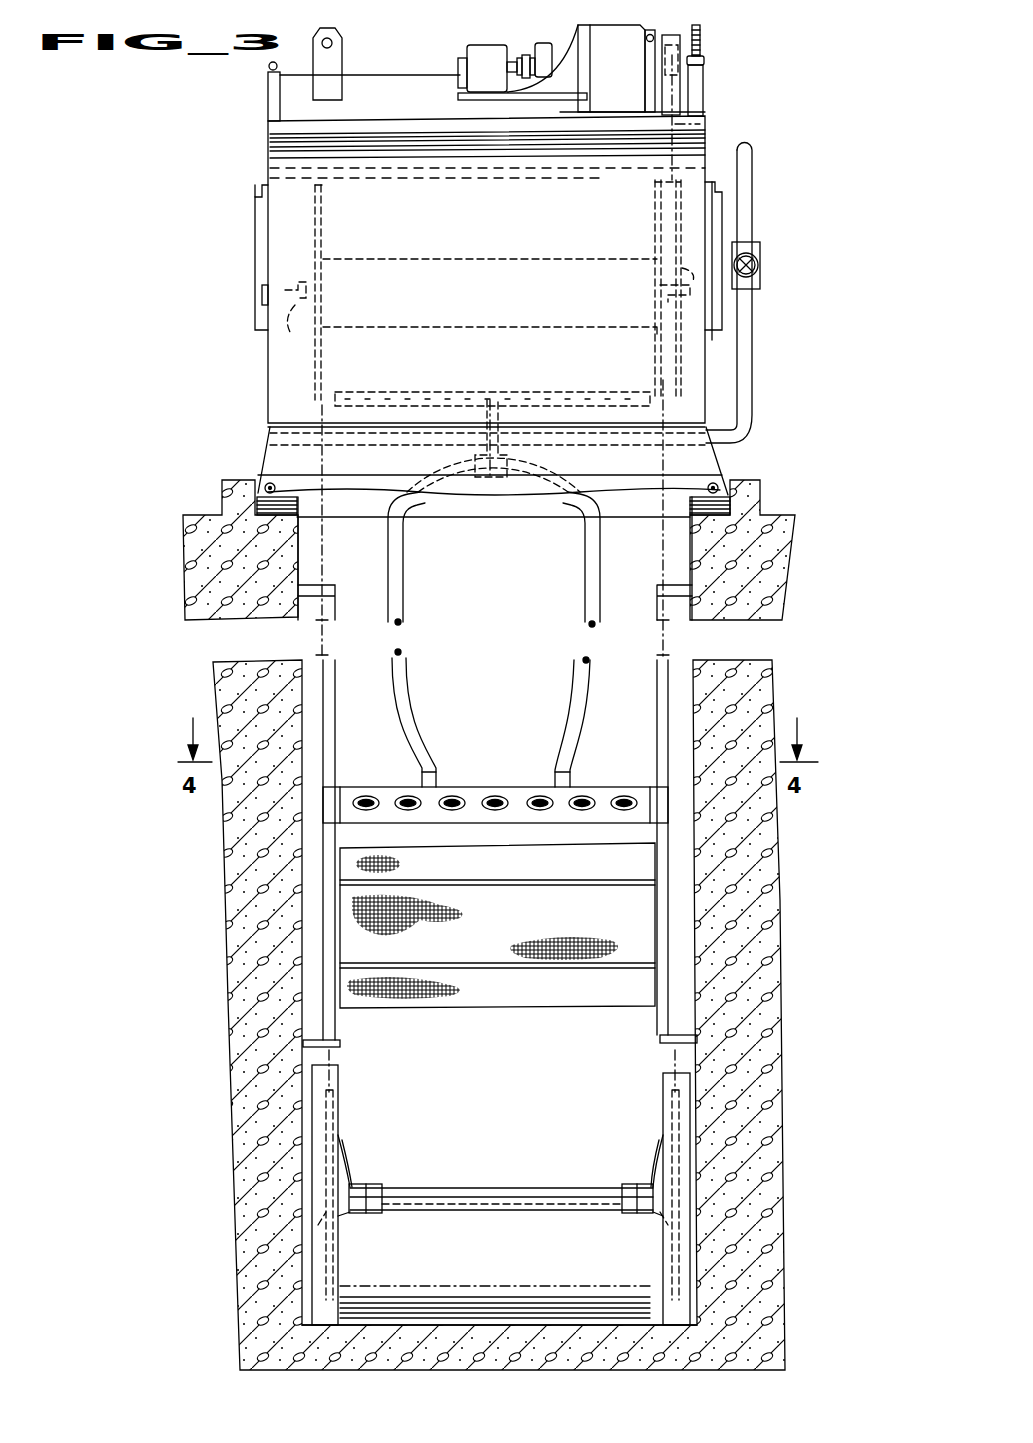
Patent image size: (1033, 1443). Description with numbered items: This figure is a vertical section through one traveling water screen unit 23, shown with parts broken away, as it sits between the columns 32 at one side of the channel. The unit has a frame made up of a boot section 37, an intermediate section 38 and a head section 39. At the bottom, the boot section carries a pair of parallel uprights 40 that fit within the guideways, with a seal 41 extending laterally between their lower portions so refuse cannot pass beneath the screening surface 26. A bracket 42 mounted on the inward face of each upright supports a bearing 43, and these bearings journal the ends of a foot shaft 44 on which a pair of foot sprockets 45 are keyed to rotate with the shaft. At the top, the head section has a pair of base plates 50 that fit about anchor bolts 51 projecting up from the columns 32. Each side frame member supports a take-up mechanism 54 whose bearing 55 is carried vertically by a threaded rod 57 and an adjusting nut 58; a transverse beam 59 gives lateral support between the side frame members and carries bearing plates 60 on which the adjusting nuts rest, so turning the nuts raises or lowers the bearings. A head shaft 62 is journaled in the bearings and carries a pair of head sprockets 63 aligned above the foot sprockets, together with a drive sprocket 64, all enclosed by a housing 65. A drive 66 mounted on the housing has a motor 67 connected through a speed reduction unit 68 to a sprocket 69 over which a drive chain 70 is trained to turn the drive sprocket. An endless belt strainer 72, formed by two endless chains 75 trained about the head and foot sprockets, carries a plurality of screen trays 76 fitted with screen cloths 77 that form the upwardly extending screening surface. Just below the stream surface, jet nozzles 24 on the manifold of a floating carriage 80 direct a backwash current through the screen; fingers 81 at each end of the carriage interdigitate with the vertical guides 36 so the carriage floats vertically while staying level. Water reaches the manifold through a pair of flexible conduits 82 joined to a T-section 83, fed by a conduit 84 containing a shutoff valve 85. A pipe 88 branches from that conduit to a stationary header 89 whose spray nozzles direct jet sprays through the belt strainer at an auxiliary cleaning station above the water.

The traveling water screen unit 23 is at (216, 240).
The jet nozzles 24 is at (366, 812).
The screening surface 26 is at (342, 932).
The columns 32 is at (762, 872).
The vertical guides 36 is at (315, 708).
The boot section 37 is at (696, 1130).
The intermediate section 38 is at (660, 862).
The head section 39 is at (266, 368).
The uprights 40 is at (338, 1079).
The seal 41 is at (499, 1282).
The bracket 42 is at (338, 1228).
The bearing 43 is at (328, 1194).
The foot shaft 44 is at (470, 1186).
The foot sprockets 45 is at (338, 1113).
The base plates 50 is at (300, 502).
The anchor bolts 51 is at (268, 486).
The take-up mechanism 54 is at (253, 209).
The bearing 55 is at (680, 272).
The threaded rod 57 is at (268, 66).
The adjusting nut 58 is at (705, 60).
The transverse beam 59 is at (370, 91).
The bearing plates 60 is at (266, 78).
The head shaft 62 is at (292, 278).
The head sprockets 63 is at (328, 205).
The drive sprocket 64 is at (652, 186).
The housing 65 is at (490, 276).
The drive 66 is at (560, 33).
The motor 67 is at (468, 56).
The speed reduction unit 68 is at (629, 70).
The sprocket 69 is at (714, 88).
The drive chain 70 is at (702, 124).
The endless belt strainer 72 is at (660, 928).
The endless chains 75 is at (335, 655).
The screen trays 76 is at (492, 885).
The screen cloths 77 is at (482, 926).
The floating carriage 80 is at (496, 788).
The fingers 81 is at (330, 790).
The flexible conduits 82 is at (575, 665).
The T-section 83 is at (478, 458).
The conduit 84 is at (754, 416).
The shutoff valve 85 is at (762, 250).
The pipe 88 is at (485, 414).
The stationary header 89 is at (520, 392).